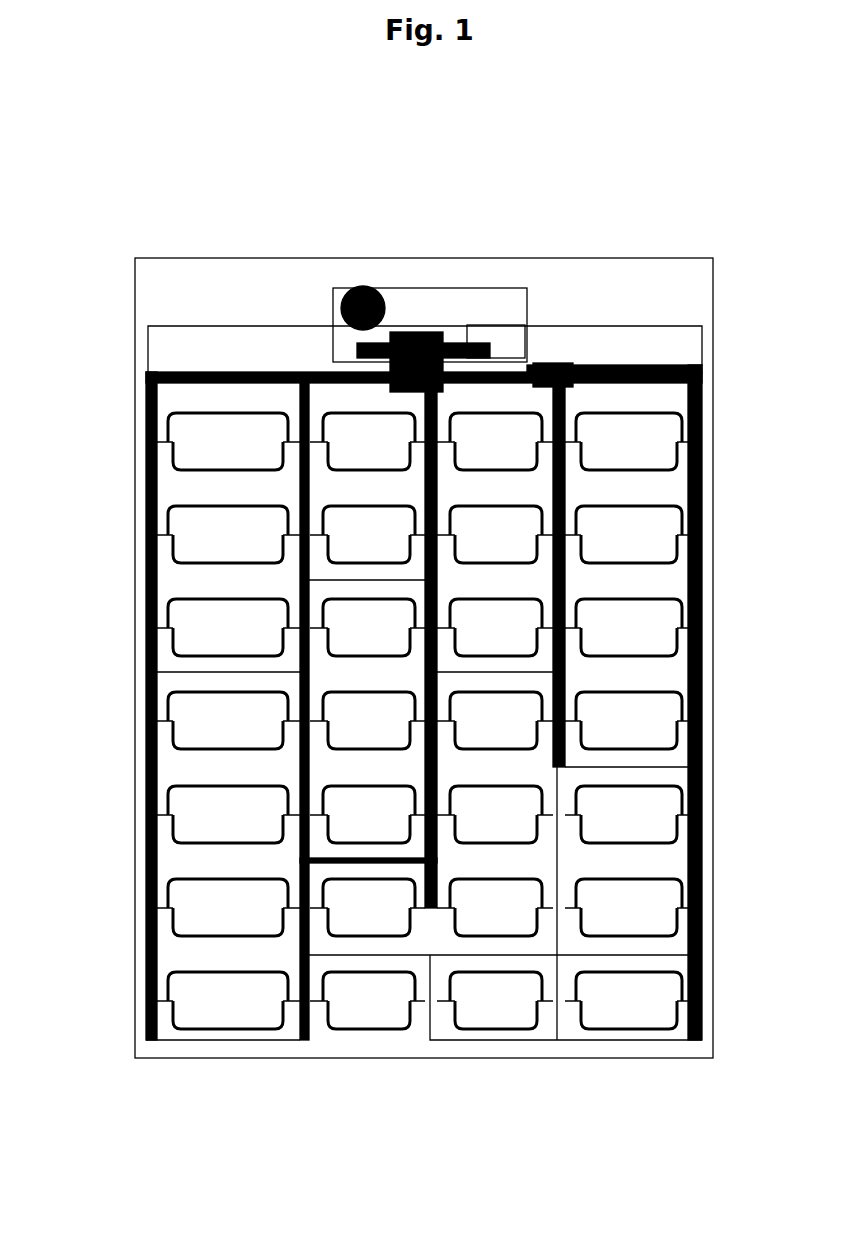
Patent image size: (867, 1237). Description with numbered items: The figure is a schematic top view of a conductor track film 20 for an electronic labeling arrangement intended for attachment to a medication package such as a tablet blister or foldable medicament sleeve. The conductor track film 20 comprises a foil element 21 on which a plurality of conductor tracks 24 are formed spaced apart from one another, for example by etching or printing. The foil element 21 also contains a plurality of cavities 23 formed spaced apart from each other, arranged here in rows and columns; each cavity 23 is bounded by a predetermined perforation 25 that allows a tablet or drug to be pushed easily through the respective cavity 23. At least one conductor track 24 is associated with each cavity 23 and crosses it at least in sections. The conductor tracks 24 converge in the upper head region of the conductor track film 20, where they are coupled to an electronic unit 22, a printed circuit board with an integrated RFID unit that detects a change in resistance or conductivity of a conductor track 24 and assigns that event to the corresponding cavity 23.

The conductor track film 20 is at (120, 189).
The foil element 21 is at (662, 275).
The electronic unit 22 is at (455, 303).
The cavity 23 is at (663, 432).
The conductor track 24 is at (305, 488).
The predetermined perforation 25 is at (168, 883).